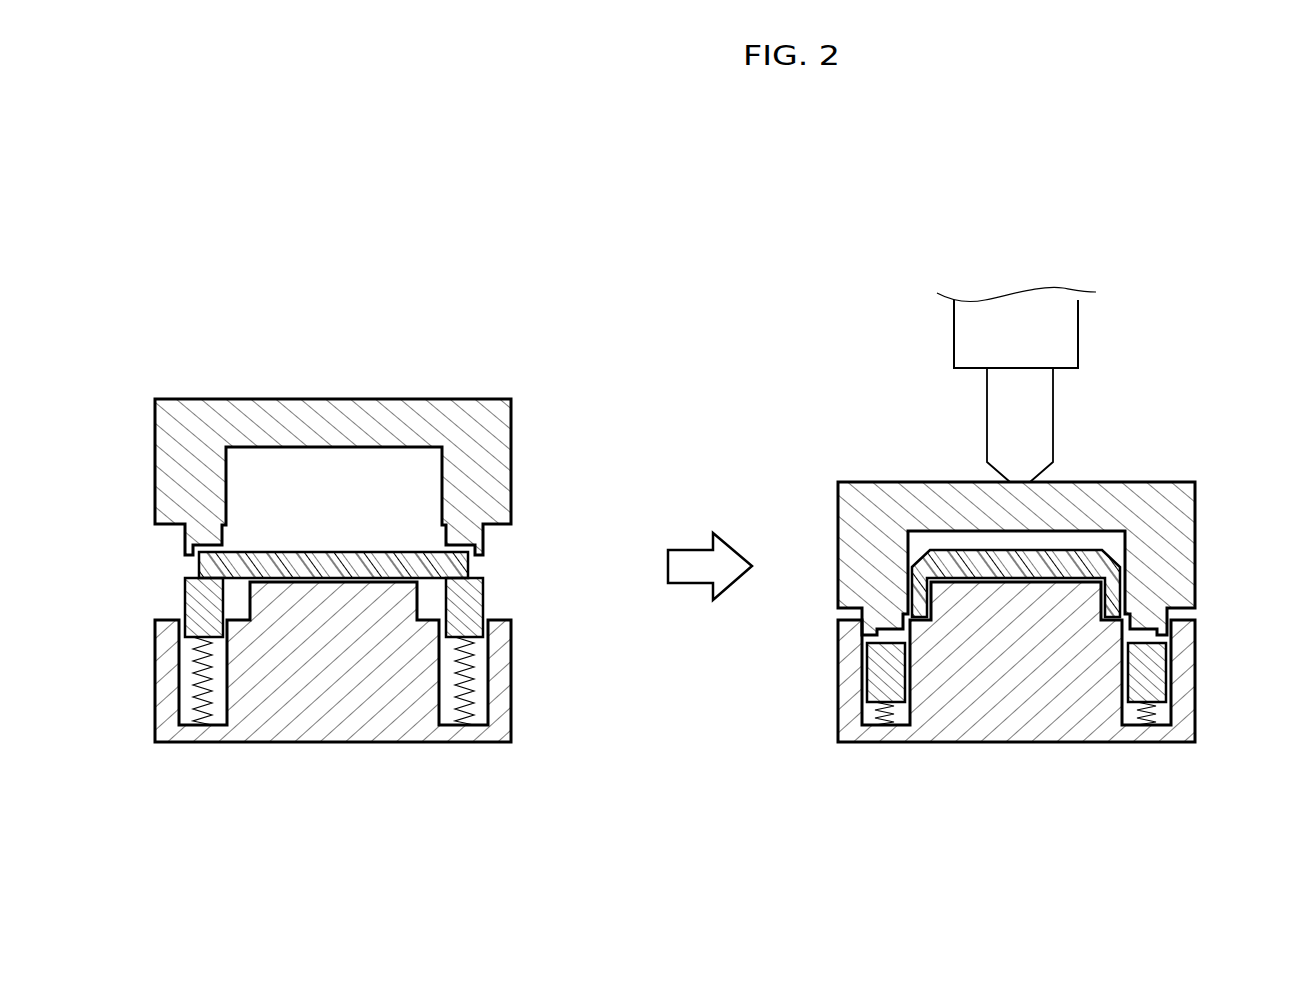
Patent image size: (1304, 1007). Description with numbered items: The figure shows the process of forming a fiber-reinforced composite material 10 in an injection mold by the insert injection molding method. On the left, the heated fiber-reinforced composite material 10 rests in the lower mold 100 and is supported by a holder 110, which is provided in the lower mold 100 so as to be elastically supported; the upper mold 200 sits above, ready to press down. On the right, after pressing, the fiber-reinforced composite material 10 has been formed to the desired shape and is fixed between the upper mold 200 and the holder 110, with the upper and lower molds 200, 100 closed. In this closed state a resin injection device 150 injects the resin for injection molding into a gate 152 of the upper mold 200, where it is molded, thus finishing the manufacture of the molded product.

The upper mold 200 is at (498, 463).
The fiber-reinforced composite material 10 is at (470, 568).
The holder 110 is at (472, 603).
The lower mold 100 is at (505, 707).
The resin injection device 150 is at (1030, 393).
The gate 152 is at (1020, 481).